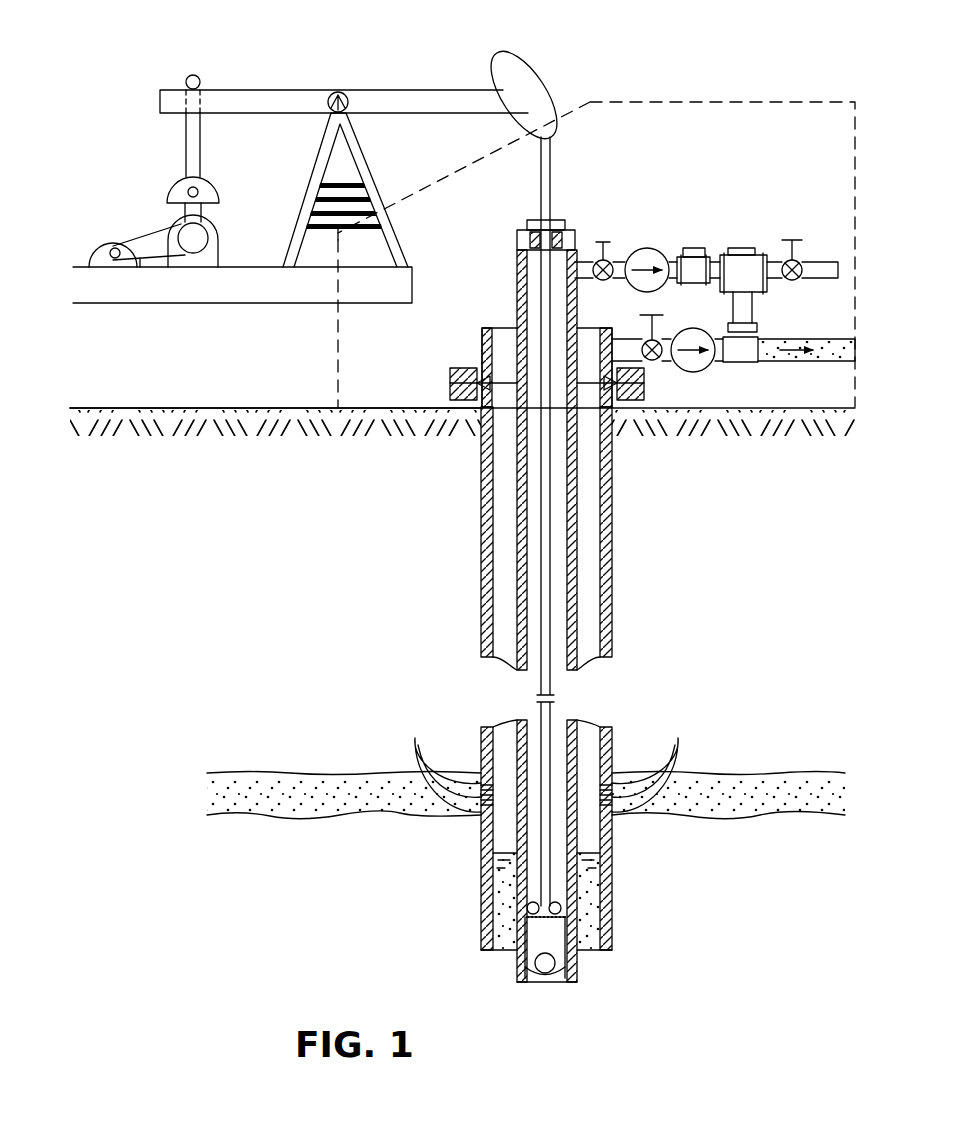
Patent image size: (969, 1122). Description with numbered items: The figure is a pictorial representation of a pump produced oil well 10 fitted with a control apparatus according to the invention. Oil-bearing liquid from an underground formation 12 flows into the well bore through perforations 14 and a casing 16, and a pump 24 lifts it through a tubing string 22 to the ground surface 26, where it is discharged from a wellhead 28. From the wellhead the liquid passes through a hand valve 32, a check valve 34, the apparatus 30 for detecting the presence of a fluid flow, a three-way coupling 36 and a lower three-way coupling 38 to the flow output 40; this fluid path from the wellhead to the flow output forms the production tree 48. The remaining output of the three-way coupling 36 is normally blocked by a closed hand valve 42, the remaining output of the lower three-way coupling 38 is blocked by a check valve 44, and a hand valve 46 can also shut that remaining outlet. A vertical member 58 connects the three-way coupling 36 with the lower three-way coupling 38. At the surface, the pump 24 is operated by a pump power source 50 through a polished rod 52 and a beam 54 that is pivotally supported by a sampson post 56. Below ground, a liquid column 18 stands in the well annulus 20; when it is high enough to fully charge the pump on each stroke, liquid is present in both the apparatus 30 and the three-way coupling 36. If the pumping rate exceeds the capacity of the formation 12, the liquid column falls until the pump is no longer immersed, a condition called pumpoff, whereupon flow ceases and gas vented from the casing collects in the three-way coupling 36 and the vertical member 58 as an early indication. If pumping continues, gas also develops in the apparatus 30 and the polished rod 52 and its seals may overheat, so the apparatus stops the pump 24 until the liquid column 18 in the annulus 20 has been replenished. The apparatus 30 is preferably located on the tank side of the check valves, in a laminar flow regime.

The pump produced oil well 10 is at (560, 92).
The underground formation 12 is at (363, 778).
The perforations 14 is at (547, 760).
The casing 16 is at (481, 453).
The liquid column 18 is at (507, 892).
The well annulus 20 is at (594, 545).
The tubing string 22 is at (527, 478).
The pump 24 is at (568, 910).
The ground surface 26 is at (150, 406).
The wellhead 28 is at (545, 272).
The apparatus for detecting the presence of a fluid flow 30 is at (694, 248).
The hand valve 32 is at (603, 238).
The check valve 34 is at (640, 247).
The three-way coupling 36 is at (742, 248).
The lower three-way coupling 38 is at (745, 353).
The flow output 40 is at (839, 355).
The hand valve 42 is at (800, 262).
The check valve 44 is at (711, 362).
The hand valve 46 is at (655, 362).
The production tree 48 is at (740, 102).
The pump power source 50 is at (116, 242).
The polished rod 52 is at (552, 196).
The beam 54 is at (352, 90).
The sampson post 56 is at (364, 150).
The vertical member 58 is at (745, 306).